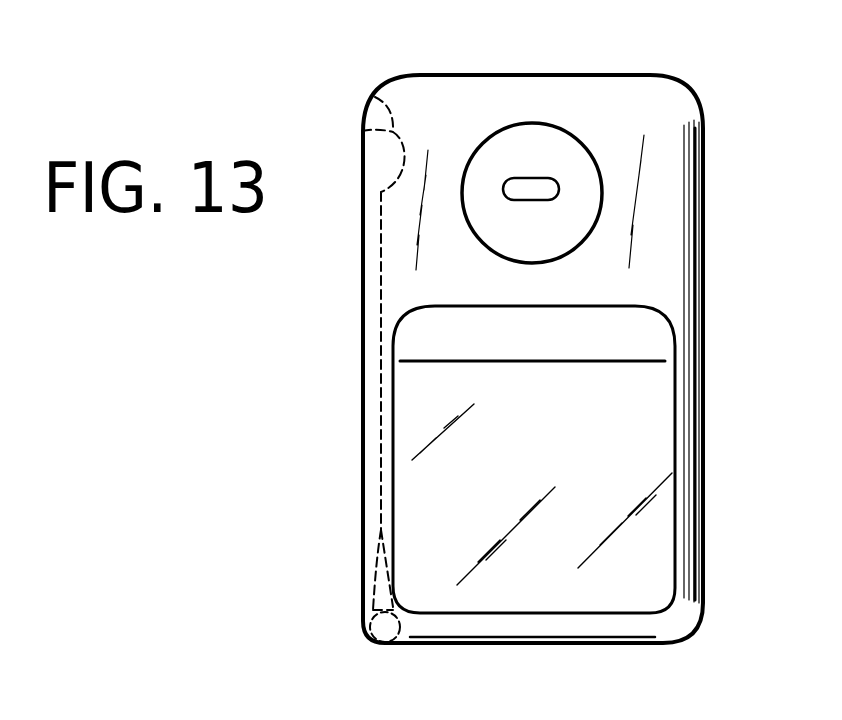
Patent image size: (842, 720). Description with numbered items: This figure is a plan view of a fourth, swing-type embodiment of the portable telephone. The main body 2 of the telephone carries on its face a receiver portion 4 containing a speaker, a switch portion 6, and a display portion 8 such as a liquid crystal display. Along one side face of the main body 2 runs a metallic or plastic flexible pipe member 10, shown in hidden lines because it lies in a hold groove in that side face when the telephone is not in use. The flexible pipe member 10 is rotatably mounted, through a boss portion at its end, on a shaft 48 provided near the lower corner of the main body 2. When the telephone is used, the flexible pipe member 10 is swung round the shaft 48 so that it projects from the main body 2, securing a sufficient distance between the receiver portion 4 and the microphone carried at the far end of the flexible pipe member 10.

The main body 2 is at (655, 72).
The receiver portion 4 is at (526, 131).
The switch portion 6 is at (668, 478).
The display portion 8 is at (660, 335).
The flexible pipe member 10 is at (375, 285).
The shaft 48 is at (381, 638).